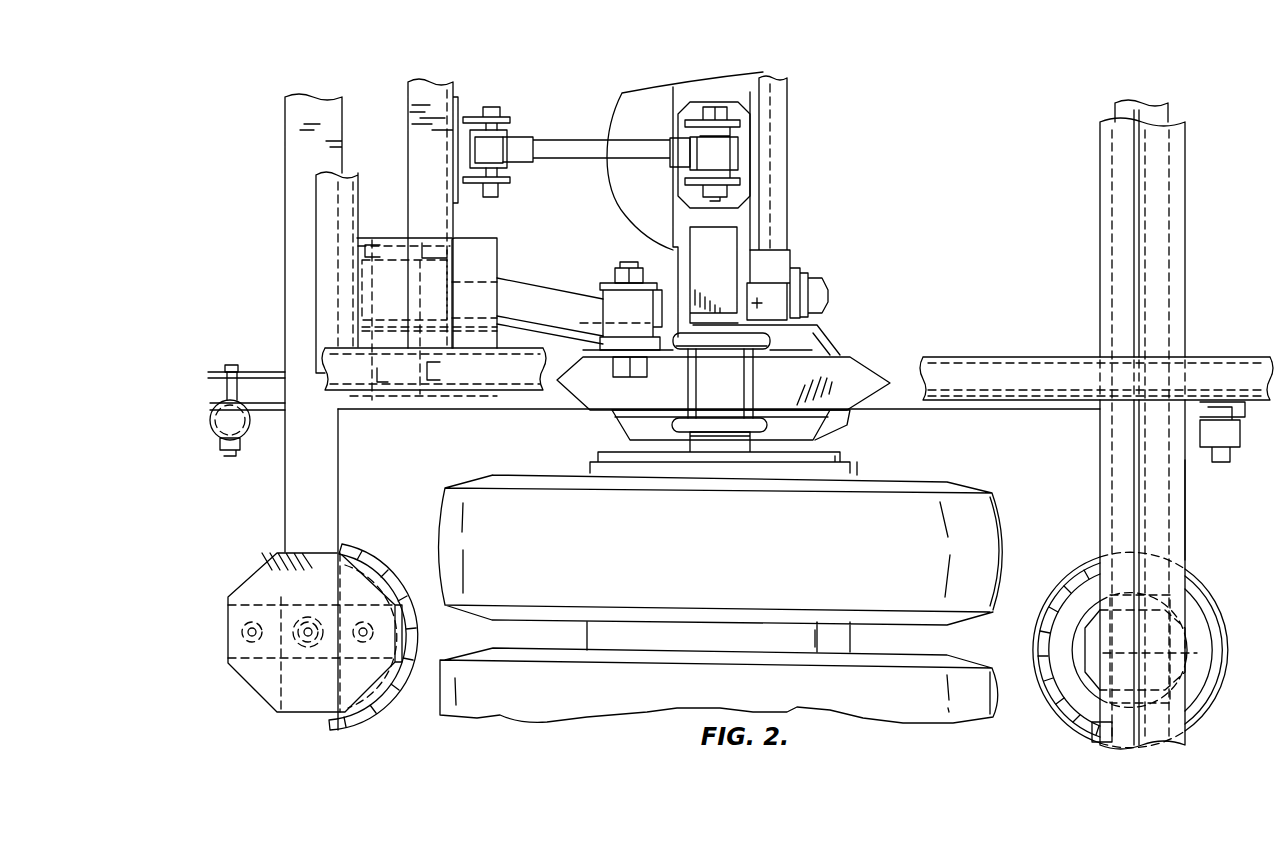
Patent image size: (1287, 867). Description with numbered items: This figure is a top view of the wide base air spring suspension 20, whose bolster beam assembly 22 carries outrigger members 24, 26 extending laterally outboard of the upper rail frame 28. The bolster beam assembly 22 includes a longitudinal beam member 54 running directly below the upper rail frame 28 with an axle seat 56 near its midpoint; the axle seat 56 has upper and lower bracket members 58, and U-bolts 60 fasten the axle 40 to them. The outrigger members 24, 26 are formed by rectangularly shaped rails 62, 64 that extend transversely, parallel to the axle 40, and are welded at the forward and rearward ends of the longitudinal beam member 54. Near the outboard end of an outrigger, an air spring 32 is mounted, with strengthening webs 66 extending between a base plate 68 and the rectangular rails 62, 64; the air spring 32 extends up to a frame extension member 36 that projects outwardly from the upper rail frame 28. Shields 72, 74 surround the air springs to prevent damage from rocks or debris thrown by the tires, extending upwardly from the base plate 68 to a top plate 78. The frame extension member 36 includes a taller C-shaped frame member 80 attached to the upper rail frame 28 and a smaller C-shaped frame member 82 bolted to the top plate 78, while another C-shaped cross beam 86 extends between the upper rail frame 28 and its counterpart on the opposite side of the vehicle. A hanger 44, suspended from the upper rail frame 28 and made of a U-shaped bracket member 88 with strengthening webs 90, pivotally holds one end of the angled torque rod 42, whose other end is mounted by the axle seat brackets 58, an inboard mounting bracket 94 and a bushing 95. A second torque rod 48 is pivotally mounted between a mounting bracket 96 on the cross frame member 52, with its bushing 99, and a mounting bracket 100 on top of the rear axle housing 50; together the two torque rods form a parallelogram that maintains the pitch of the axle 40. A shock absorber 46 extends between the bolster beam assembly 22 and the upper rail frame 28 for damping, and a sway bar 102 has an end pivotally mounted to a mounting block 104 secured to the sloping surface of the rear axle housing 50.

The wide base air spring suspension 20 is at (965, 152).
The bolster beam assembly 22 is at (1001, 422).
The outrigger member 24 is at (274, 512).
The outrigger member 26 is at (1180, 509).
The upper rail frame 28 is at (978, 356).
The air spring 32 is at (1205, 595).
The frame extension member 36 is at (1199, 536).
The axle 40 is at (724, 465).
The torque rod 42 is at (540, 295).
The hanger 44 is at (460, 262).
The shock absorber 46 is at (216, 432).
The second torque rod 48 is at (566, 144).
The rear axle housing 50 is at (640, 95).
The cross frame member 52 is at (420, 88).
The longitudinal beam member 54 is at (893, 357).
The axle seat 56 is at (851, 328).
The bracket members 58 is at (822, 428).
The U-bolts 60 is at (766, 405).
The rectangular rail 62 is at (312, 100).
The rectangular rail 64 is at (1165, 112).
The strengthening webs 66 is at (235, 640).
The base plate 68 is at (248, 588).
The shield 72 is at (385, 562).
The shield 74 is at (1055, 703).
The top plate 78 is at (1190, 652).
The C-shaped frame member 80 is at (1178, 186).
The C-shaped frame member 82 is at (1100, 738).
The C-shaped cross beam 86 is at (1103, 183).
The U-shaped bracket member 88 is at (366, 240).
The strengthening webs 90 is at (398, 242).
The inboard mounting bracket 94 is at (610, 290).
The bushing 95 is at (630, 264).
The mounting bracket 96 is at (512, 120).
The bushing 99 is at (490, 106).
The mounting bracket 100 is at (712, 100).
The sway bar 102 is at (782, 158).
The mounting block 104 is at (735, 245).